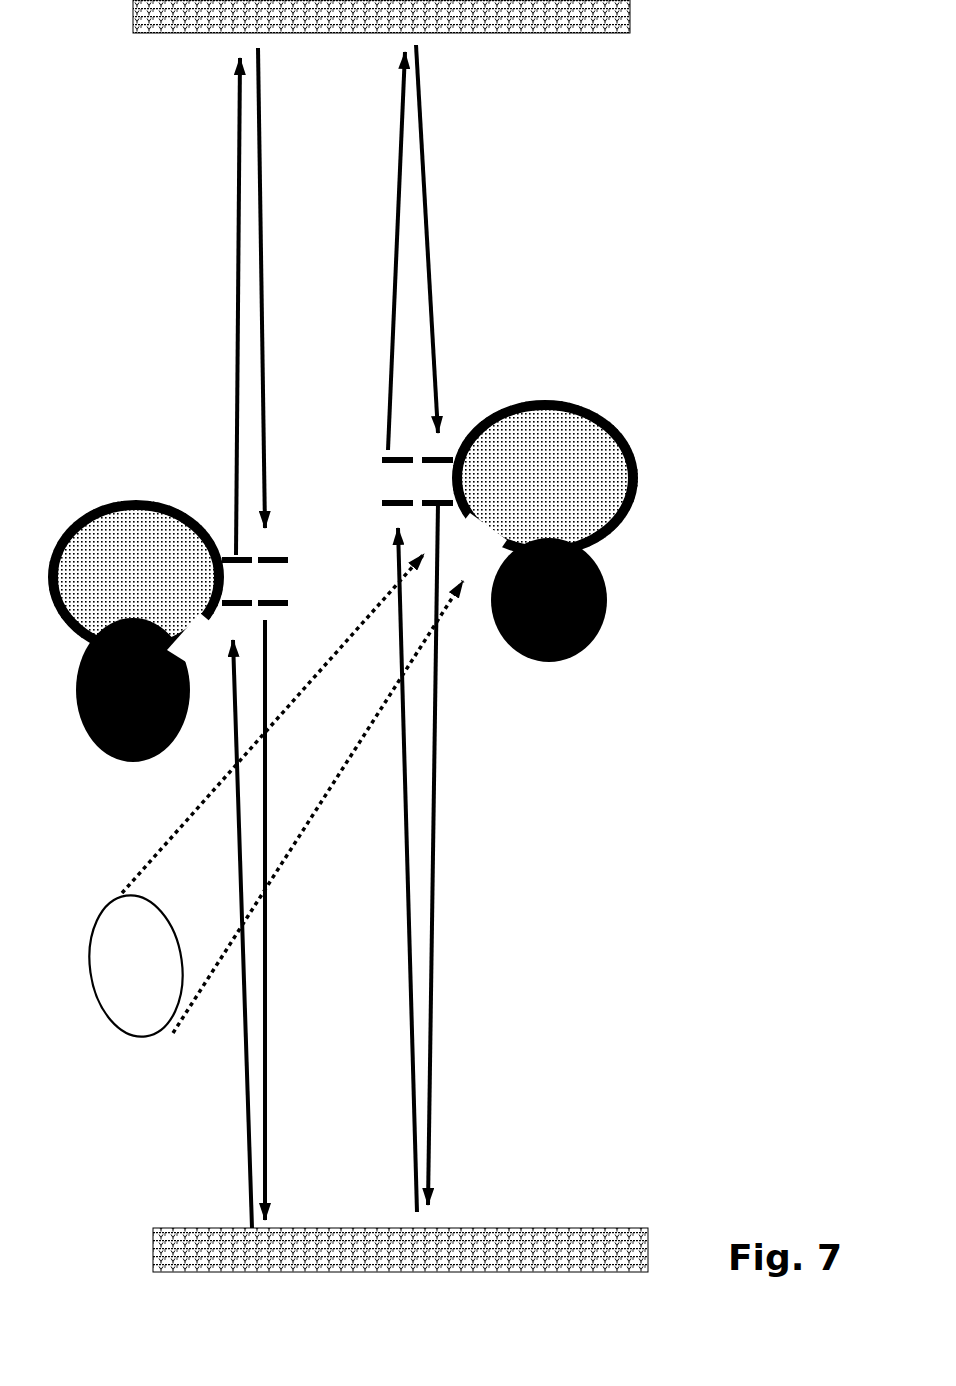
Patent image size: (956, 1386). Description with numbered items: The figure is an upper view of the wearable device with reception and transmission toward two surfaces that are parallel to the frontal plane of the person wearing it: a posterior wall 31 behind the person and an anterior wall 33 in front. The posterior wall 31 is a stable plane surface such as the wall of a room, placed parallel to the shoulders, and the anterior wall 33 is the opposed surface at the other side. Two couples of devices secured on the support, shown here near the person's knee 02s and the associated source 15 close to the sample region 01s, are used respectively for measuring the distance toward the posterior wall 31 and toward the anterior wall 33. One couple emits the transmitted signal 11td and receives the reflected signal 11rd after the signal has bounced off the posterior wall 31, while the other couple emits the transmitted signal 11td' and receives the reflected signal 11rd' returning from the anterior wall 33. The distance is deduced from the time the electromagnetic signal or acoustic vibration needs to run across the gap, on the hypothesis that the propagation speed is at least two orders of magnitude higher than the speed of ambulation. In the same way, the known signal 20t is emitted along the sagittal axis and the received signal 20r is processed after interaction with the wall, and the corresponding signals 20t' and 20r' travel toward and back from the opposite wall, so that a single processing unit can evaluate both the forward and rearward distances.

The posterior wall 31 is at (510, 42).
The anterior wall 33 is at (615, 1222).
The light source 15 is at (118, 950).
The first sample 01s is at (585, 630).
The second sample 02s is at (630, 450).
The transmitted signal 11td is at (205, 782).
The reflected signal 11rd is at (277, 609).
The transmitted signal 11td' is at (192, 306).
The reflected signal 11rd' is at (306, 288).
The transmitted signal 20t is at (281, 878).
The received signal 20r is at (351, 861).
The transmitted beam (after reflection) 20t' is at (368, 251).
The reflected beam (after reflection) 20r' is at (464, 239).